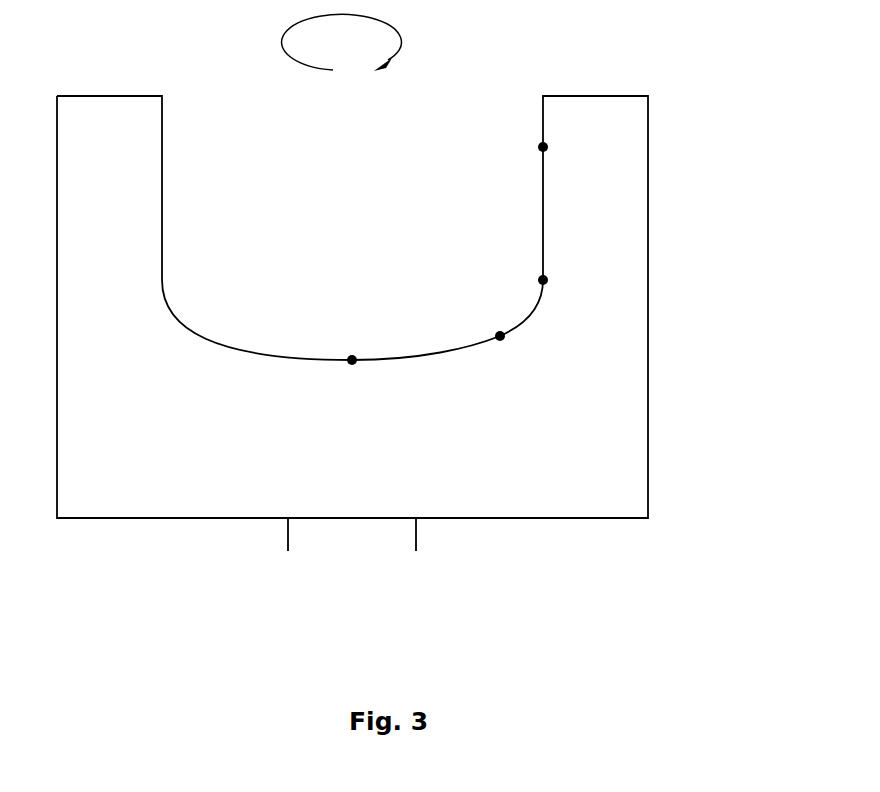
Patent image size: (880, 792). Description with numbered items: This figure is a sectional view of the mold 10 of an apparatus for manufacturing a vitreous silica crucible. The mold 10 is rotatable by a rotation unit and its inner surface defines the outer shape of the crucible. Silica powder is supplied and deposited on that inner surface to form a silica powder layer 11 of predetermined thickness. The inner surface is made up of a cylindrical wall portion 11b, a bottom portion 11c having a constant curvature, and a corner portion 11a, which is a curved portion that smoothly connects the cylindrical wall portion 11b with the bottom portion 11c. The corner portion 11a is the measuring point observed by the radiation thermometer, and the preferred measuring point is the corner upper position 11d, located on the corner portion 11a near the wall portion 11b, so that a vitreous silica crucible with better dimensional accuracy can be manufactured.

The mold 10 is at (163, 519).
The silica powder layer 11 is at (428, 258).
The corner portion 11a is at (500, 336).
The cylindrical wall portion 11b is at (543, 147).
The bottom portion 11c is at (352, 360).
The corner upper position 11d is at (543, 280).